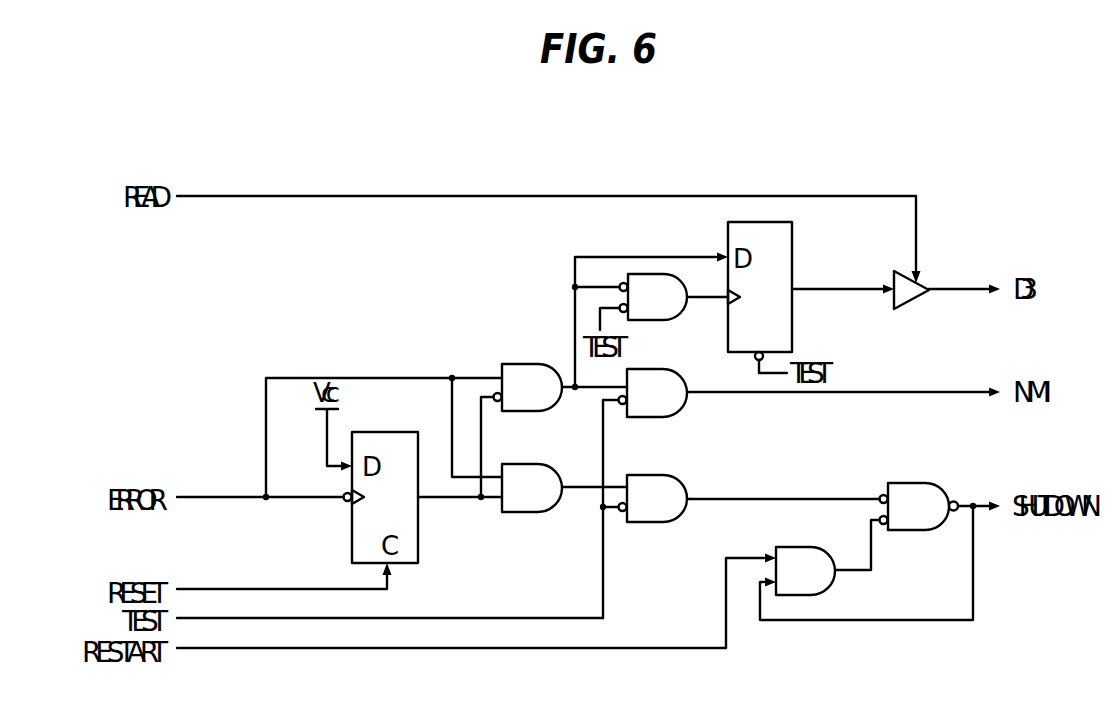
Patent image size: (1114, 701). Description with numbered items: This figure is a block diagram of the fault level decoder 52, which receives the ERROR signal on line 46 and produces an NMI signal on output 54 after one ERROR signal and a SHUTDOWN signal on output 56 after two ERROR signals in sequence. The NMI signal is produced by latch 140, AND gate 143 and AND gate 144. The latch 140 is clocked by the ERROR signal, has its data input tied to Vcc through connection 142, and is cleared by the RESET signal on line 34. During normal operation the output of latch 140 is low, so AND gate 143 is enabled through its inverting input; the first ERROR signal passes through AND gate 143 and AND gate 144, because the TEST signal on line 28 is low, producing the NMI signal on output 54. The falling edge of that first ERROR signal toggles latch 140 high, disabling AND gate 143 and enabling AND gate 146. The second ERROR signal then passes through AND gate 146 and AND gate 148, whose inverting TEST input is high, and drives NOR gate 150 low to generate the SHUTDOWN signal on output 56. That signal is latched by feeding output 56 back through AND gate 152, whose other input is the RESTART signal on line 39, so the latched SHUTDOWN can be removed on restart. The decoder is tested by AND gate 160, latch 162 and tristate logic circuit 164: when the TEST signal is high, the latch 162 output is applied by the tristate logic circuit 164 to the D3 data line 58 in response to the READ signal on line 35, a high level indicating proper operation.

The TEST signal line 28 is at (299, 617).
The RESET signal line 34 is at (226, 588).
The READ signal line 35 is at (549, 239).
The RESTART signal line 39 is at (262, 650).
The ERROR signal line 46 is at (223, 496).
The fault level decoder 52 is at (679, 160).
The NMI output 54 is at (957, 391).
The SHUTDOWN output 56 is at (965, 503).
The D3 data line 58 is at (963, 288).
The latch 140 is at (402, 410).
The Vcc connection 142 is at (327, 433).
The AND gate 143 is at (530, 368).
The AND gate 144 is at (671, 384).
The AND gate 146 is at (535, 506).
The AND gate 148 is at (660, 517).
The NOR gate 150 is at (911, 488).
The AND gate 152 is at (822, 561).
The AND gate 160 is at (652, 275).
The latch 162 is at (788, 246).
The tristate logic circuit 164 is at (905, 268).